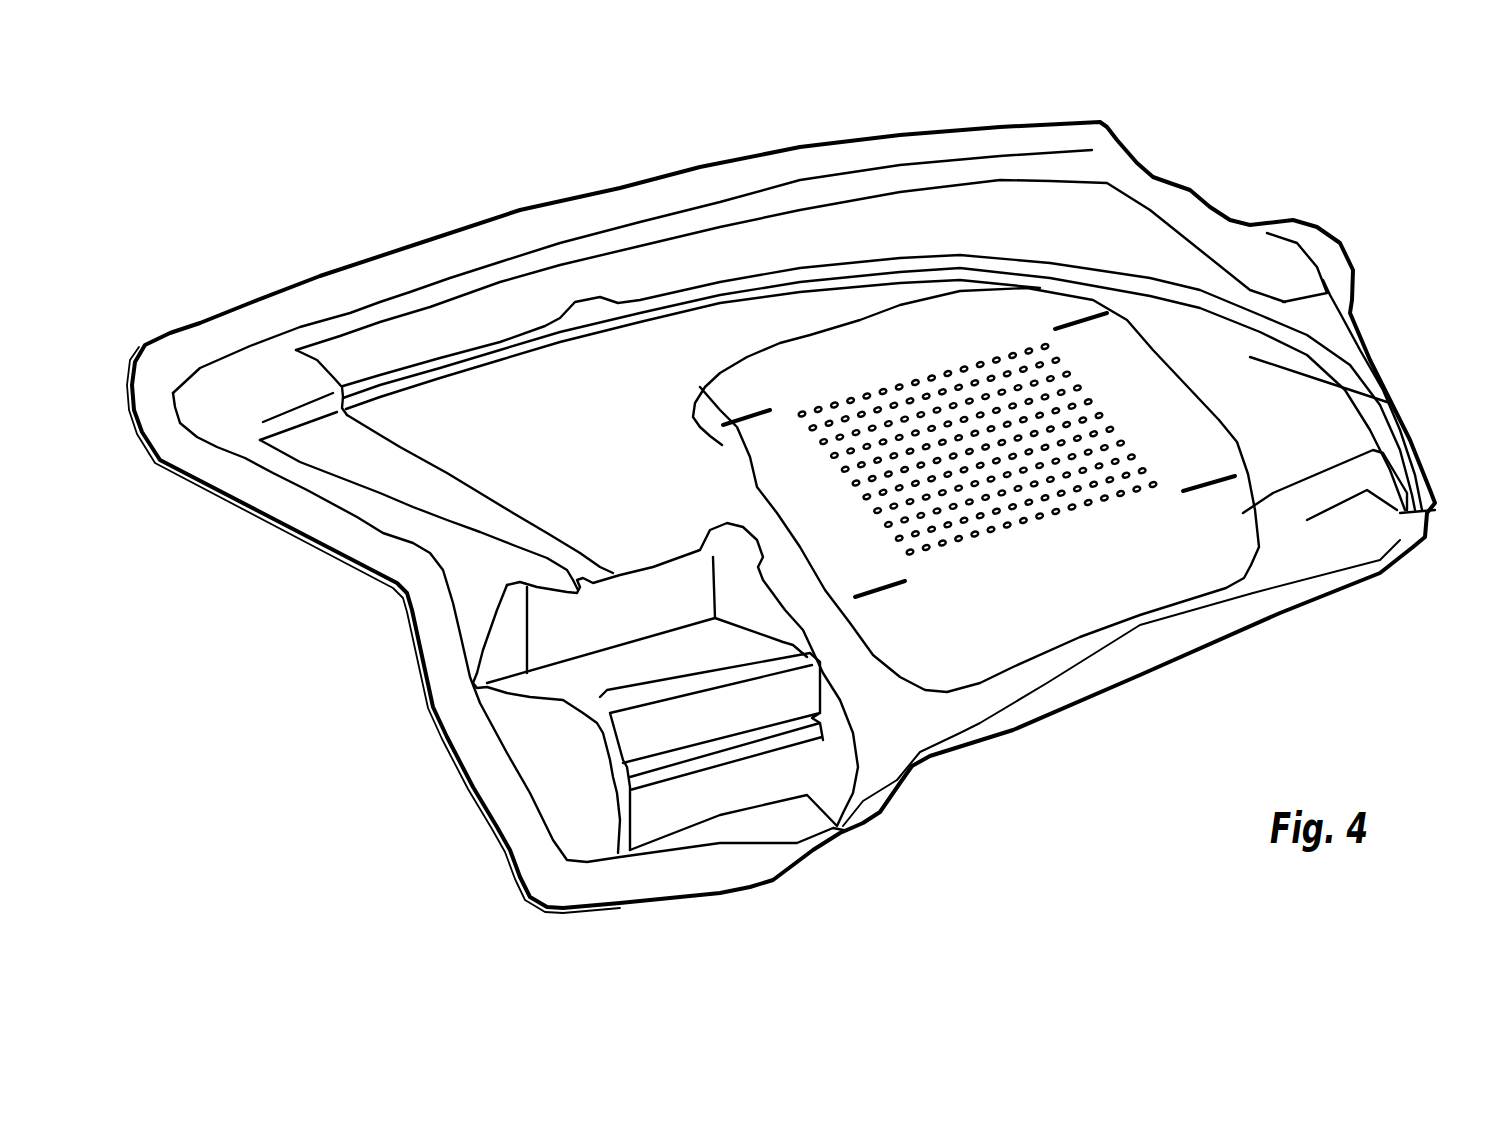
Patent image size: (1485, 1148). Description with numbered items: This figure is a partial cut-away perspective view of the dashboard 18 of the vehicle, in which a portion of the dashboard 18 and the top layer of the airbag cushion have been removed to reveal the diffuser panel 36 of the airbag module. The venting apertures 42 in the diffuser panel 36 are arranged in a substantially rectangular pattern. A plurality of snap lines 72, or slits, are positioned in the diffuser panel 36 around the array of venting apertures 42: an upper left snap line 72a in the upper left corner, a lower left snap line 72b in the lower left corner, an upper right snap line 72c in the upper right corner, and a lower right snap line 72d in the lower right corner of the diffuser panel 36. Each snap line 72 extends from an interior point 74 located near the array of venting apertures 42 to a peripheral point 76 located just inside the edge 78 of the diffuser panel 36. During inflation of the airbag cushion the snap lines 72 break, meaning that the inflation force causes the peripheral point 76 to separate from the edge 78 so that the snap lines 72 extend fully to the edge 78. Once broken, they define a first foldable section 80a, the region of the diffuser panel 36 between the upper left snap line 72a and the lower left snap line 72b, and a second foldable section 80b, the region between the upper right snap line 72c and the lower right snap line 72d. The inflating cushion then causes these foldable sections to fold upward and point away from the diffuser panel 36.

The dashboard 18 is at (1273, 422).
The diffuser panel 36 is at (1107, 612).
The venting apertures 42 is at (975, 367).
The snap lines 72 is at (734, 427).
The upper left snap line 72a is at (700, 387).
The lower left snap line 72b is at (870, 598).
The upper right snap line 72c is at (1085, 316).
The lower right snap line 72d is at (1208, 495).
The interior point 74 is at (770, 412).
The peripheral point 76 is at (700, 427).
The edge 78 is at (693, 407).
The first foldable section 80a is at (960, 303).
The second foldable section 80b is at (1023, 642).